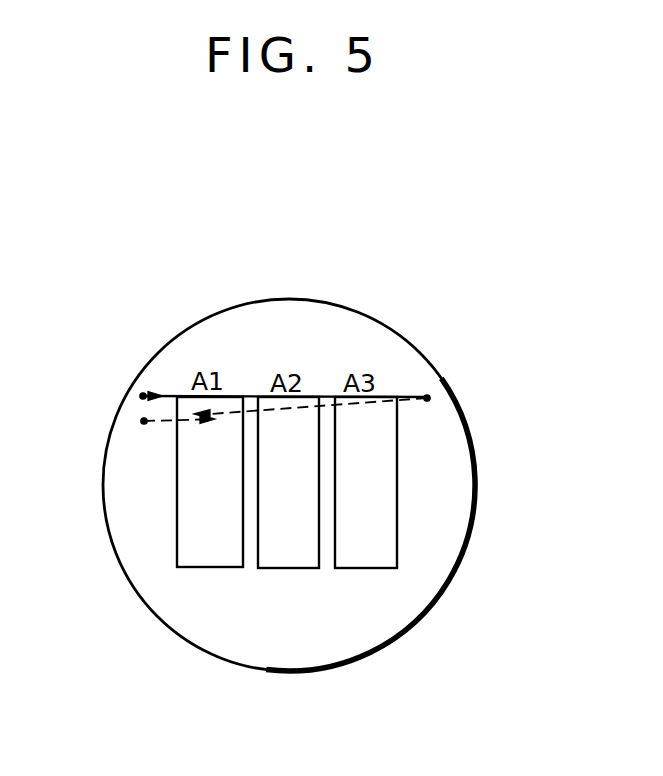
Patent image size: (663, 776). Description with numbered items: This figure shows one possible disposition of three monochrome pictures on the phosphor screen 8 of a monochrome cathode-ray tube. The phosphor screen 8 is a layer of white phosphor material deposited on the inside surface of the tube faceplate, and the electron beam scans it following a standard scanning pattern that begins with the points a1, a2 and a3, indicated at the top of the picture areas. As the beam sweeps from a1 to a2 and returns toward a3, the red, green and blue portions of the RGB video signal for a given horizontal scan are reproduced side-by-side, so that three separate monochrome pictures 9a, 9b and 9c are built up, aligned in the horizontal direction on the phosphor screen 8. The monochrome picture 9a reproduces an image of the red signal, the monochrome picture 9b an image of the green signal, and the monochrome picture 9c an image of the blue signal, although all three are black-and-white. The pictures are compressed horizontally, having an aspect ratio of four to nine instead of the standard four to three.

The phosphor screen 8 is at (358, 312).
The monochrome picture 9a is at (210, 567).
The monochrome picture 9b is at (292, 568).
The monochrome picture 9c is at (368, 568).
The scanning pattern start point a1 is at (143, 396).
The scanning pattern point a2 is at (427, 398).
The scanning pattern point a3 is at (144, 421).